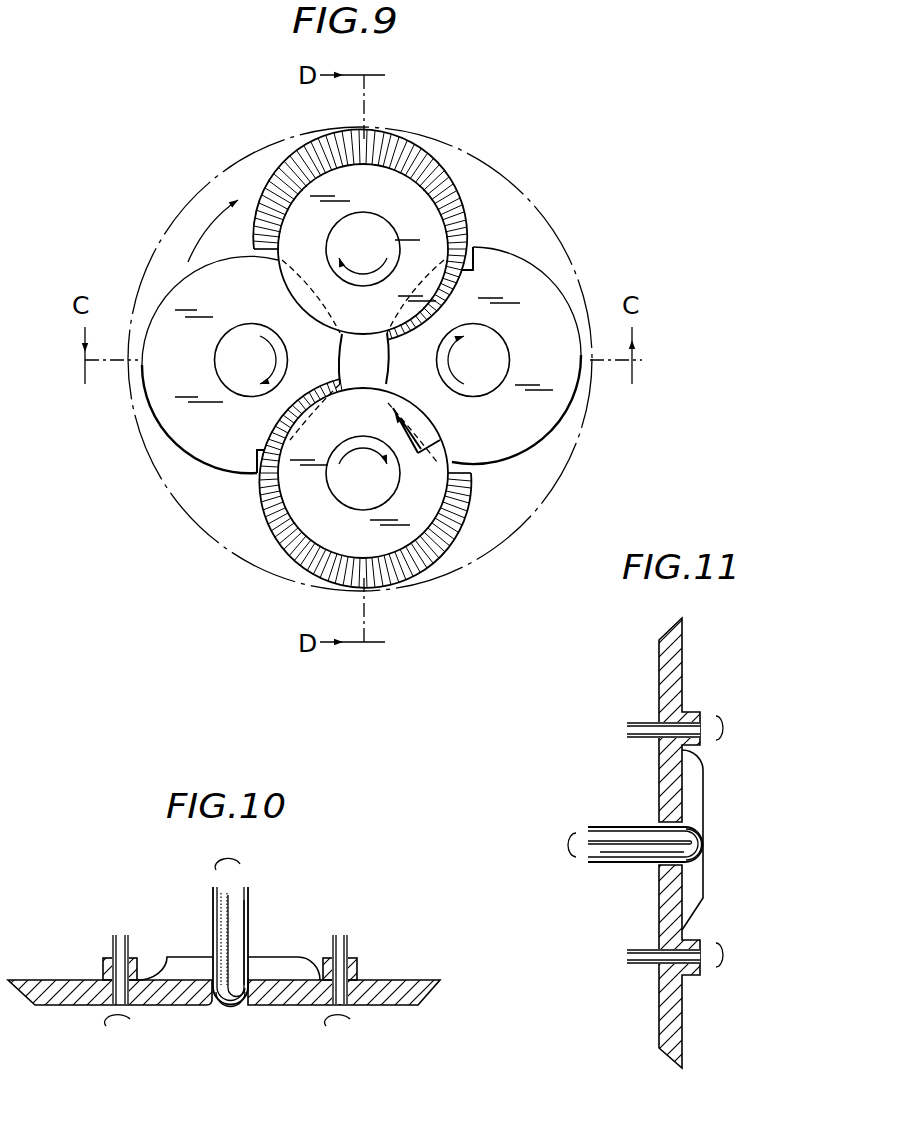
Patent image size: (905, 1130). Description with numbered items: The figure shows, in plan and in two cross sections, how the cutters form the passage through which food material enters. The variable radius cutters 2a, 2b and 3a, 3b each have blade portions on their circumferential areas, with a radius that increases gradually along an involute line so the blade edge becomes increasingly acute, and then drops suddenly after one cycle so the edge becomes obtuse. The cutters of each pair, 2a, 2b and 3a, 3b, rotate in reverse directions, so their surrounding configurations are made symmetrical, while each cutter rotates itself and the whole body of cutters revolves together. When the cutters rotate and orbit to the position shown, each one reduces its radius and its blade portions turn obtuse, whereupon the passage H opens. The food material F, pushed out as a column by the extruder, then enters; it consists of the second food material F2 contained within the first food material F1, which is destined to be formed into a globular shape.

In FIG. 9, the variable radius cutter 2a is at (414, 188).
In FIG. 10, the variable radius cutter 2a is at (292, 965).
In FIG. 11, the variable radius cutter 2a is at (678, 663).
In FIG. 9, the variable radius cutter 2b is at (296, 535).
In FIG. 11, the variable radius cutter 2b is at (678, 1018).
In FIG. 9, the variable radius cutter 3a is at (550, 298).
In FIG. 10, the variable radius cutter 3a is at (395, 1005).
In FIG. 9, the variable radius cutter 3b is at (158, 402).
In FIG. 10, the variable radius cutter 3b is at (55, 1003).
In FIG. 11, the variable radius cutter 3b is at (705, 890).
In FIG. 10, the food material F is at (252, 895).
In FIG. 11, the food material F is at (595, 818).
In FIG. 10, the first food material F1 is at (248, 940).
In FIG. 11, the first food material F1 is at (620, 826).
In FIG. 10, the second food material F2 is at (220, 940).
In FIG. 11, the second food material F2 is at (625, 850).
In FIG. 9, the passage H is at (364, 357).
In FIG. 10, the passage H is at (251, 1008).
In FIG. 11, the passage H is at (657, 821).